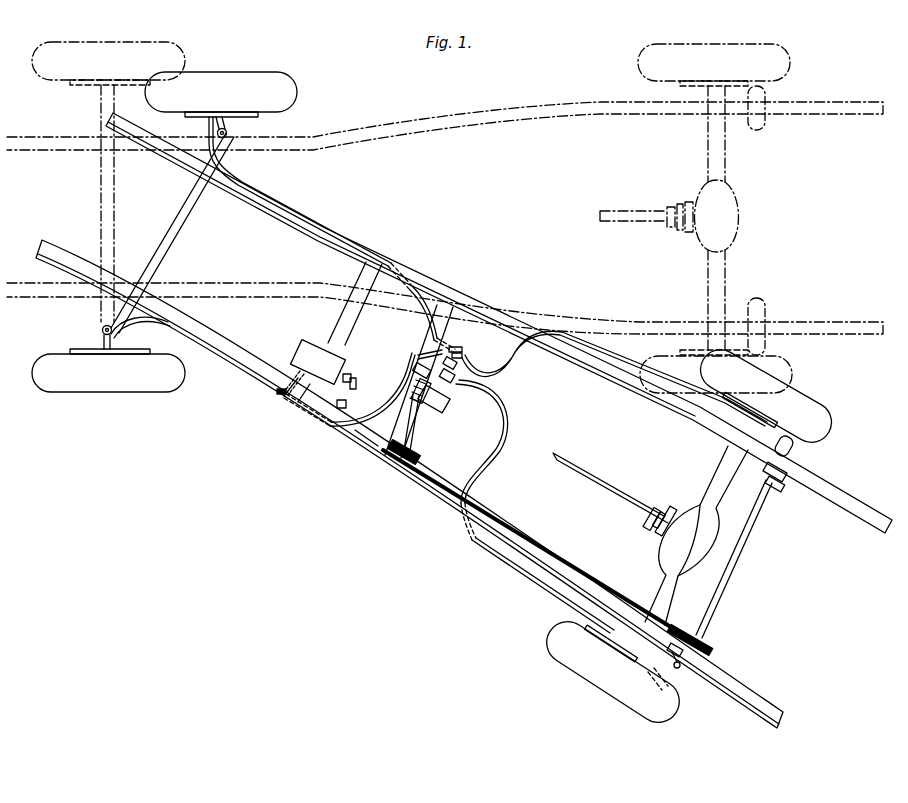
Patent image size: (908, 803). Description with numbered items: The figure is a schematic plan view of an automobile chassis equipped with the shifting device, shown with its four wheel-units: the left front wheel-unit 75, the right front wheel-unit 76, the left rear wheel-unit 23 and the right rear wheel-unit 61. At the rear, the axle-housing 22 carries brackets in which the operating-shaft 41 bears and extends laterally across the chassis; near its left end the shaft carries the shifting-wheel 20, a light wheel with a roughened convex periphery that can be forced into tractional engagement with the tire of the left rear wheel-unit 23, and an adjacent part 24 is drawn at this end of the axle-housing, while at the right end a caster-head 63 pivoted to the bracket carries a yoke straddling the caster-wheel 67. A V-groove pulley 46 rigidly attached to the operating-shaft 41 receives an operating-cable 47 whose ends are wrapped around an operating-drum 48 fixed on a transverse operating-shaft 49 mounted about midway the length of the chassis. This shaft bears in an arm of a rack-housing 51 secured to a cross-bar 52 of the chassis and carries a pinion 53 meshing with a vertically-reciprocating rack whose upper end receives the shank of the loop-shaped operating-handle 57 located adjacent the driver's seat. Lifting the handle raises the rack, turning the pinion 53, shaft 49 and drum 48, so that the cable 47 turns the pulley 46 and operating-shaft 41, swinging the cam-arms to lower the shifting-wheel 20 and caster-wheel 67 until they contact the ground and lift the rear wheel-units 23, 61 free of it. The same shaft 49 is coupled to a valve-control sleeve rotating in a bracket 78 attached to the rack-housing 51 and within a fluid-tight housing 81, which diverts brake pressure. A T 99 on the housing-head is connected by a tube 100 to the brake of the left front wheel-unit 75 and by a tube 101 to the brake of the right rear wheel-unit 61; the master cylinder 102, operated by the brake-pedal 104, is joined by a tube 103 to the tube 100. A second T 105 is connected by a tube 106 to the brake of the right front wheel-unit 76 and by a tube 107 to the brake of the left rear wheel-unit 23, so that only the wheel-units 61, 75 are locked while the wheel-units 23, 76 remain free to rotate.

The shifting-wheel 20 is at (762, 304).
The axle-housing 22 is at (708, 268).
The left rear wheel-unit 23 is at (598, 684).
The bolt 24 is at (680, 670).
The operating-shaft 41 is at (718, 572).
The V-groove pulley 46 is at (706, 642).
The operating-cable 47 is at (583, 564).
The operating-drum 48 is at (416, 458).
The transverse operating-shaft 49 is at (411, 441).
The rack-housing 51 is at (410, 385).
The cross-bar 52 is at (370, 444).
The pinion 53 is at (441, 409).
The operating-handle 57 is at (414, 369).
The right rear wheel-unit 61 is at (790, 62).
The caster-head 63 is at (778, 488).
The caster-wheel 67 is at (762, 128).
The left front wheel-unit 75 is at (162, 392).
The right front wheel-unit 76 is at (174, 44).
The bracket 78 is at (453, 393).
The fluid-tight housing 81 is at (420, 354).
The T 99 is at (452, 377).
The tube 100 is at (126, 327).
The tube 101 is at (532, 356).
The master cylinder 102 is at (318, 348).
The tube 103 is at (292, 370).
The brake-pedal 104 is at (356, 373).
The T 105 is at (464, 340).
The tube 106 is at (220, 163).
The tube 107 is at (478, 478).